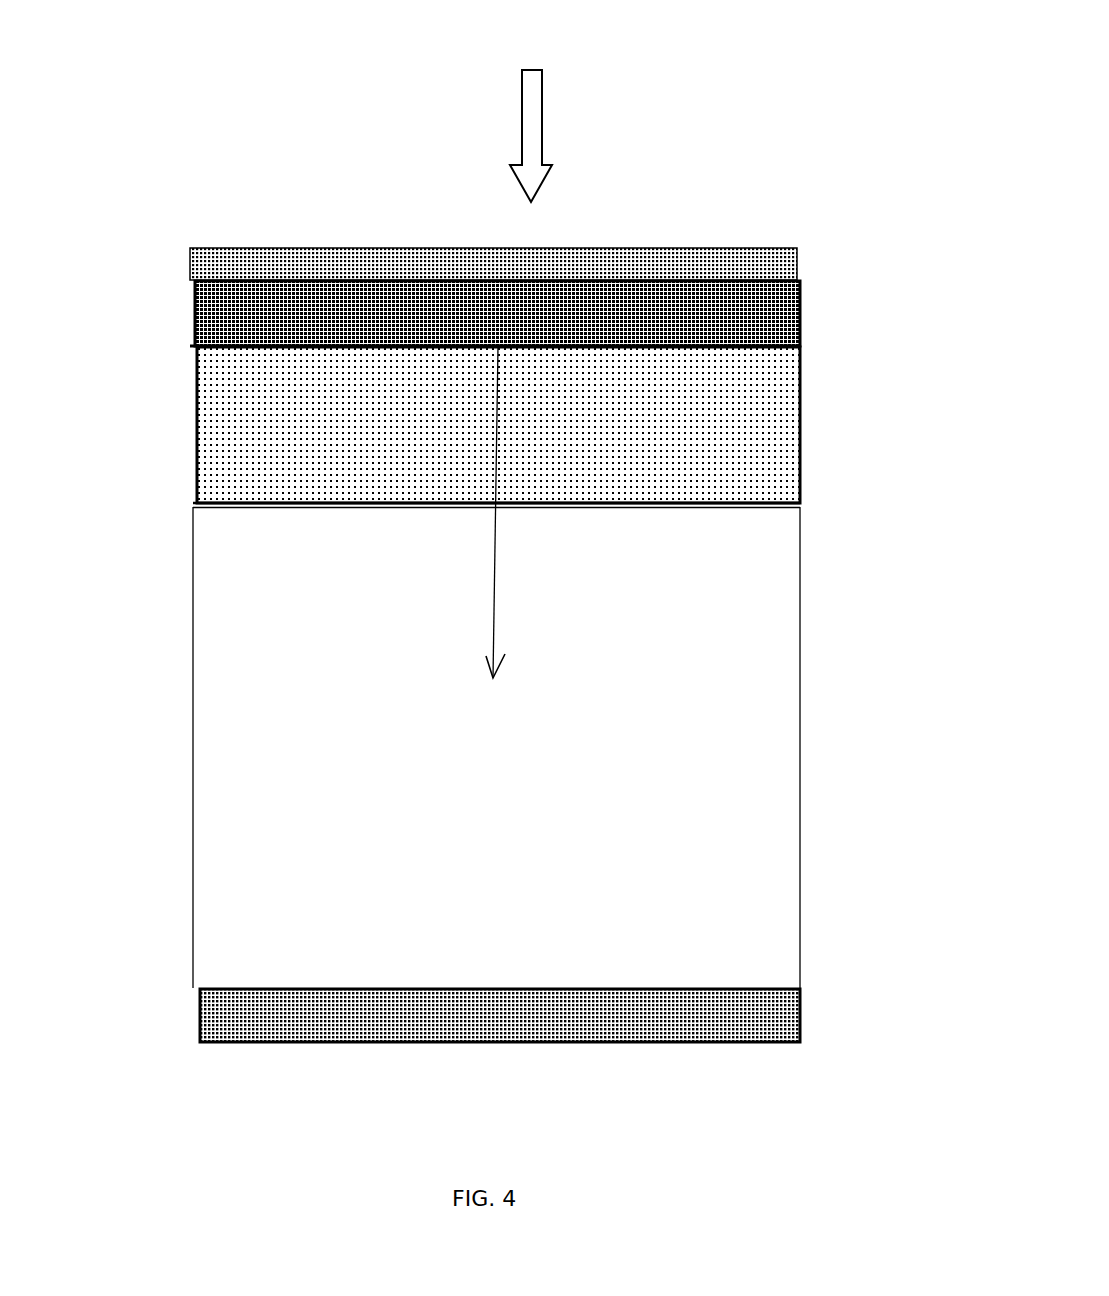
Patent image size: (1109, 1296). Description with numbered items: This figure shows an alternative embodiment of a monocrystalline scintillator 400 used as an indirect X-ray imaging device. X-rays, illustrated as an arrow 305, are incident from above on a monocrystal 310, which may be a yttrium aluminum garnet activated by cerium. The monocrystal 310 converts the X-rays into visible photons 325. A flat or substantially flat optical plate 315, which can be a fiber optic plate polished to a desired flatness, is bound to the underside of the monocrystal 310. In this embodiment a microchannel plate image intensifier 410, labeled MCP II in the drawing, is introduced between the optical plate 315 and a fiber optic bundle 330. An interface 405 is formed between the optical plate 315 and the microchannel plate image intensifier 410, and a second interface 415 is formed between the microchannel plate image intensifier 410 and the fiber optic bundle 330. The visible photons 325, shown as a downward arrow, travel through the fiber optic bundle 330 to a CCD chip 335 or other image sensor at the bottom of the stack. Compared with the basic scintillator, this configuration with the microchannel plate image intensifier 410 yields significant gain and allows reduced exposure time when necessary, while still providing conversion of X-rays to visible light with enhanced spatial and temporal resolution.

The detector assembly 400 is at (850, 83).
The X-rays 305 is at (558, 120).
The monocrystal 310 is at (818, 260).
The optical plate 315 is at (816, 318).
The interface 405 is at (180, 338).
The microchannel plate image intensifier 410 is at (818, 421).
The interface 415 is at (180, 505).
The fiber optic bundle 330 is at (186, 607).
The photons 325 is at (478, 646).
The CCD chip 335 is at (190, 1008).